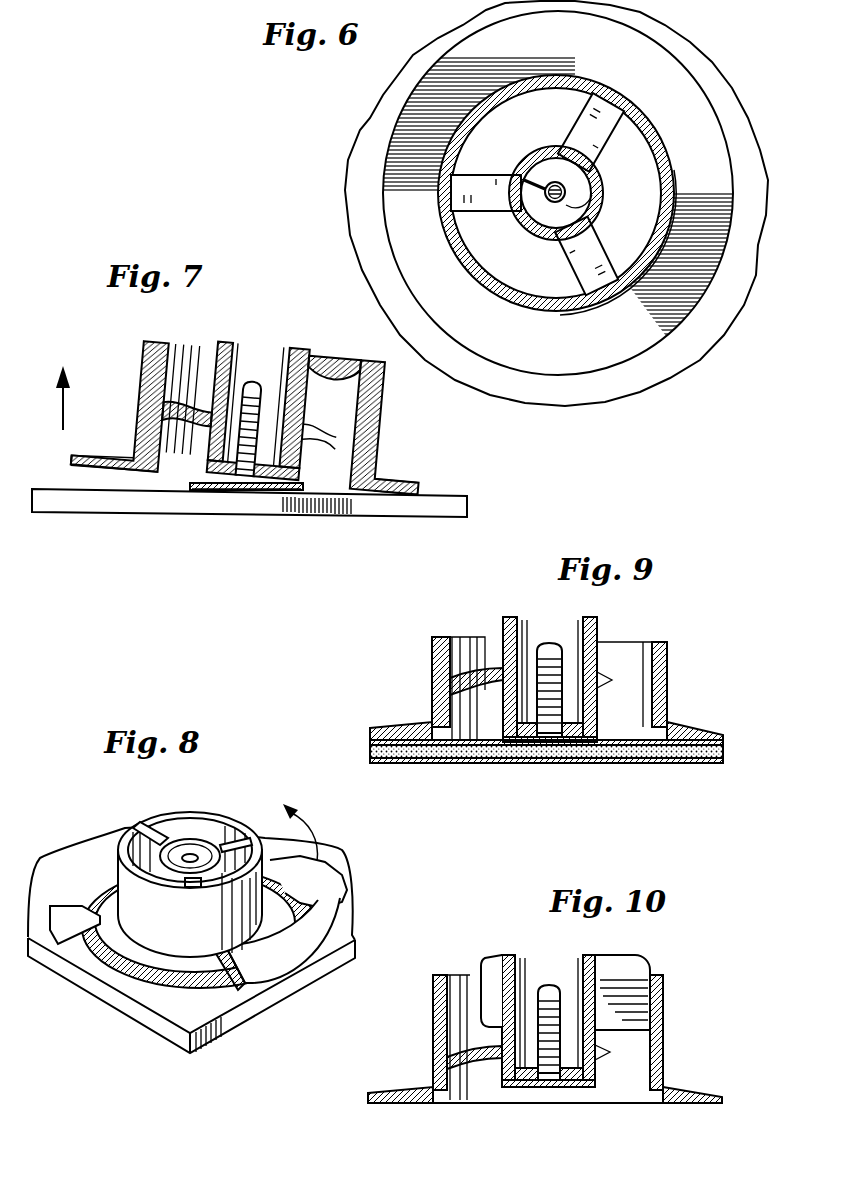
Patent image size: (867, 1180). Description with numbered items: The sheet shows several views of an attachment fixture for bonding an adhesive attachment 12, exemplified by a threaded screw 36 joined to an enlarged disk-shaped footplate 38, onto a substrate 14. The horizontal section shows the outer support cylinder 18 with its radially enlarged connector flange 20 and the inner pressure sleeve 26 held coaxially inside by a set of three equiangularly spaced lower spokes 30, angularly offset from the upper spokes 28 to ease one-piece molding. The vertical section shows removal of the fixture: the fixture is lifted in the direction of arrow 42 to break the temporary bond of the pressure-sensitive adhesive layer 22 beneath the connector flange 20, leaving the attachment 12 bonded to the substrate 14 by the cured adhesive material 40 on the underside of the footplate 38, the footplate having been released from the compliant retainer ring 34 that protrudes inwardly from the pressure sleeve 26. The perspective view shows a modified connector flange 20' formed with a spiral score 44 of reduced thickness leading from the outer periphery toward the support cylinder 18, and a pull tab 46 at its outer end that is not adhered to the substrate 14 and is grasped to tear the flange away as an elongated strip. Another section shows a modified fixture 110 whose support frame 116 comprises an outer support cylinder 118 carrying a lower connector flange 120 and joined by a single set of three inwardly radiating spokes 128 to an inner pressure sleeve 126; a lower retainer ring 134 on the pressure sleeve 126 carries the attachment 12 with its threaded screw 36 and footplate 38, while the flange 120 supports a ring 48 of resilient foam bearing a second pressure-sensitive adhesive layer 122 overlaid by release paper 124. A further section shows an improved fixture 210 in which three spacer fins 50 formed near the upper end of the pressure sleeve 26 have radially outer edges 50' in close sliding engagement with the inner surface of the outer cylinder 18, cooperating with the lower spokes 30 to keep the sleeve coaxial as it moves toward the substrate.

In FIG. 6, the adhesive attachment 12 is at (462, 137).
In FIG. 7, the adhesive attachment 12 is at (247, 375).
In FIG. 8, the adhesive attachment 12 is at (187, 855).
In FIG. 9, the adhesive attachment 12 is at (547, 627).
In FIG. 6, the substrate 14 is at (672, 362).
In FIG. 7, the substrate 14 is at (458, 498).
In FIG. 8, the substrate 14 is at (220, 1033).
In FIG. 6, the outer support cylinder 18 is at (580, 305).
In FIG. 7, the outer support cylinder 18 is at (375, 423).
In FIG. 8, the outer support cylinder 18 is at (187, 810).
In FIG. 10, the outer support cylinder 18 is at (665, 1074).
In FIG. 6, the connector flange 20 is at (513, 193).
In FIG. 7, the connector flange 20 is at (263, 445).
In FIG. 10, the connector flange 20 is at (545, 1079).
In FIG. 8, the modified connector flange 20' is at (191, 874).
In FIG. 7, the adhesive layer 22 is at (87, 466).
In FIG. 6, the inner pressure sleeve 26 is at (535, 240).
In FIG. 7, the inner pressure sleeve 26 is at (213, 423).
In FIG. 8, the inner pressure sleeve 26 is at (170, 878).
In FIG. 10, the inner pressure sleeve 26 is at (509, 953).
In FIG. 7, the upper spokes 28 is at (318, 368).
In FIG. 8, the upper spokes 28 is at (200, 888).
In FIG. 6, the lower spokes 30 is at (468, 202).
In FIG. 7, the lower spokes 30 is at (307, 440).
In FIG. 8, the lower spokes 30 is at (192, 837).
In FIG. 10, the lower spokes 30 is at (477, 1045).
In FIG. 7, the retainer ring 34 is at (283, 478).
In FIG. 10, the retainer ring 34 is at (523, 1082).
In FIG. 6, the threaded screw 36 is at (552, 182).
In FIG. 7, the threaded screw 36 is at (253, 392).
In FIG. 9, the threaded screw 36 is at (568, 653).
In FIG. 10, the threaded screw 36 is at (548, 987).
In FIG. 6, the footplate 38 is at (592, 183).
In FIG. 7, the footplate 38 is at (277, 490).
In FIG. 9, the footplate 38 is at (530, 737).
In FIG. 10, the footplate 38 is at (570, 1088).
In FIG. 7, the adhesive material 40 is at (213, 490).
In FIG. 7, the arrow 42 is at (65, 402).
In FIG. 8, the spiral score 44 is at (283, 842).
In FIG. 8, the pull tab 46 is at (62, 912).
In FIG. 9, the foam ring 48 is at (700, 765).
In FIG. 10, the spacer fins 50 is at (642, 983).
In FIG. 10, the radially outer edges 50' is at (685, 1000).
In FIG. 9, the modified fixture 110 is at (685, 670).
In FIG. 9, the support frame 116 is at (440, 634).
In FIG. 9, the outer support cylinder 118 is at (440, 658).
In FIG. 9, the connector flange 120 is at (683, 727).
In FIG. 9, the second pressure-sensitive adhesive layer 122 is at (407, 766).
In FIG. 9, the release paper 124 is at (662, 766).
In FIG. 9, the inner pressure sleeve 126 is at (598, 657).
In FIG. 9, the spokes 128 is at (477, 668).
In FIG. 9, the lower retainer ring 134 is at (597, 716).
In FIG. 10, the improved fixture 210 is at (697, 985).